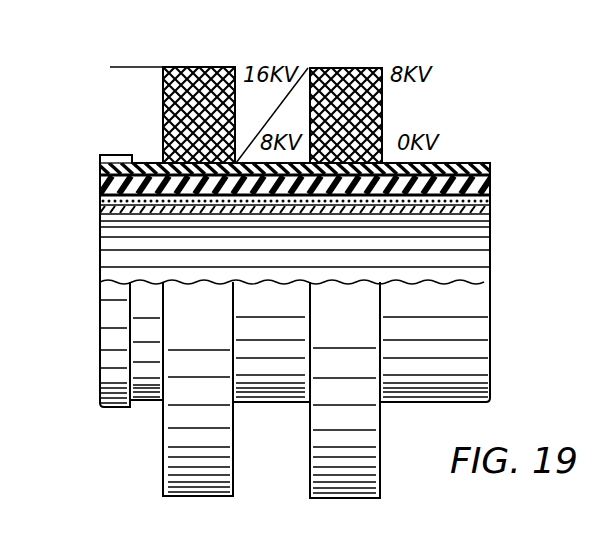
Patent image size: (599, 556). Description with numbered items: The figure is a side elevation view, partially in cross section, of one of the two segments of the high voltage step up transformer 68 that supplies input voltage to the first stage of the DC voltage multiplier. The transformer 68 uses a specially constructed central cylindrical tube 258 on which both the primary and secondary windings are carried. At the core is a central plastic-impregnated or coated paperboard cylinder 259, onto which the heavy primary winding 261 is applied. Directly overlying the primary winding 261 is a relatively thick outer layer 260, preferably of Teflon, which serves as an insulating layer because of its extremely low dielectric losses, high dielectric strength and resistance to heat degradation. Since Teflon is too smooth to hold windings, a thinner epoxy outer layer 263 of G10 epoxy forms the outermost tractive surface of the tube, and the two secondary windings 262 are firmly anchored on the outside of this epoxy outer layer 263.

The transformer 68 is at (105, 135).
The central cylindrical tube 258 is at (108, 178).
The central plastic-impregnated or coated paperboard cylinder 259 is at (107, 227).
The outer layer 260 is at (490, 191).
The primary winding 261 is at (107, 200).
The secondary winding 262 is at (203, 68).
The epoxy outer layer 263 is at (462, 163).